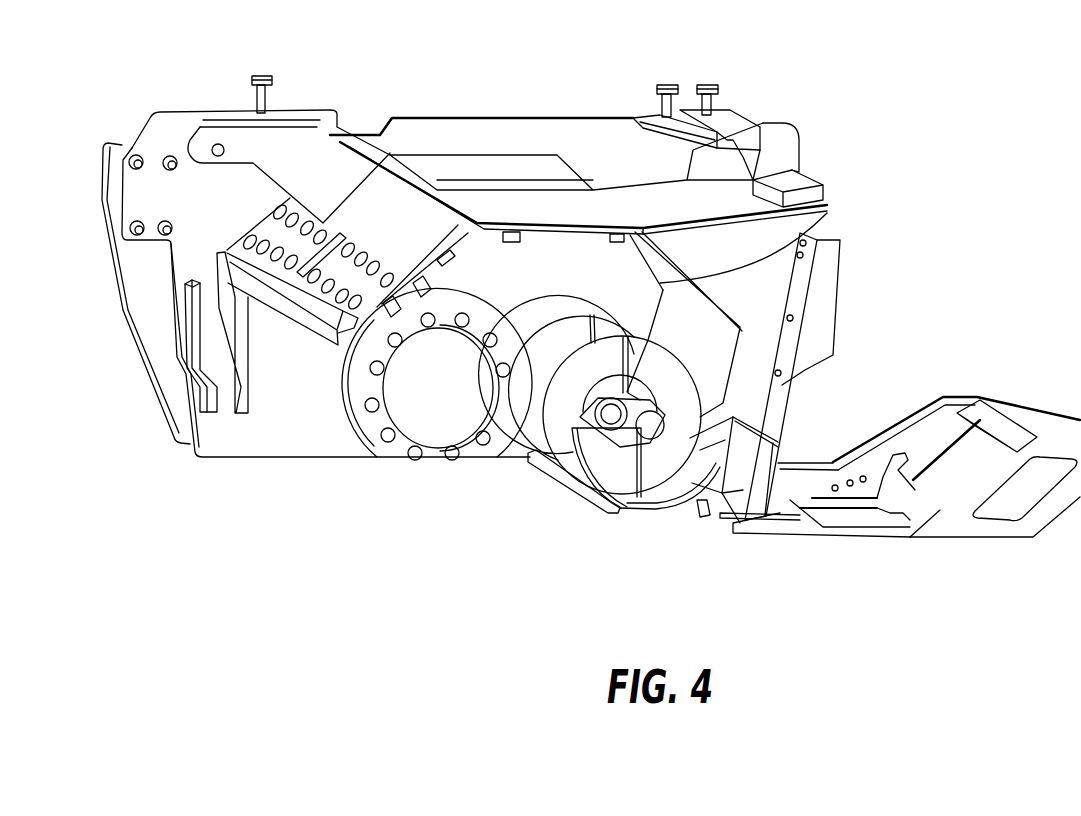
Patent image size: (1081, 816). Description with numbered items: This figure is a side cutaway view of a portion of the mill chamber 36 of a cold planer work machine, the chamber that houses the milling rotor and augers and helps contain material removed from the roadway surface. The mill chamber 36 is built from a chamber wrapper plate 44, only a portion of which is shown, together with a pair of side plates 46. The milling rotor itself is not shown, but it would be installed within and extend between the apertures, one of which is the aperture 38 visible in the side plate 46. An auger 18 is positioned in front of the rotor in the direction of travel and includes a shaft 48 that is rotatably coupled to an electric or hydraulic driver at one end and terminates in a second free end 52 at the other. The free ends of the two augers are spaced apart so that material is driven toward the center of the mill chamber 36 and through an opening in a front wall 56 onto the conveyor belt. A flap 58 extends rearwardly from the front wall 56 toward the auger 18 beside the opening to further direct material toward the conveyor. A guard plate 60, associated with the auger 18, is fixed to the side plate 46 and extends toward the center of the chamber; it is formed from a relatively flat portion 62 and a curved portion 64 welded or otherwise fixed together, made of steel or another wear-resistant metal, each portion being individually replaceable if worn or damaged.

The mill chamber 36 is at (815, 123).
The chamber wrapper plate 44 is at (375, 217).
The side plate 46 is at (483, 137).
The flap 58 is at (677, 283).
The front wall 56 is at (717, 350).
The auger 18 is at (683, 410).
The curved portion 64 is at (690, 480).
The aperture 38 is at (410, 413).
The shaft 48 is at (595, 497).
The flat portion 62 is at (607, 500).
The second free end 52 is at (650, 425).
The guard plate 60 is at (670, 507).